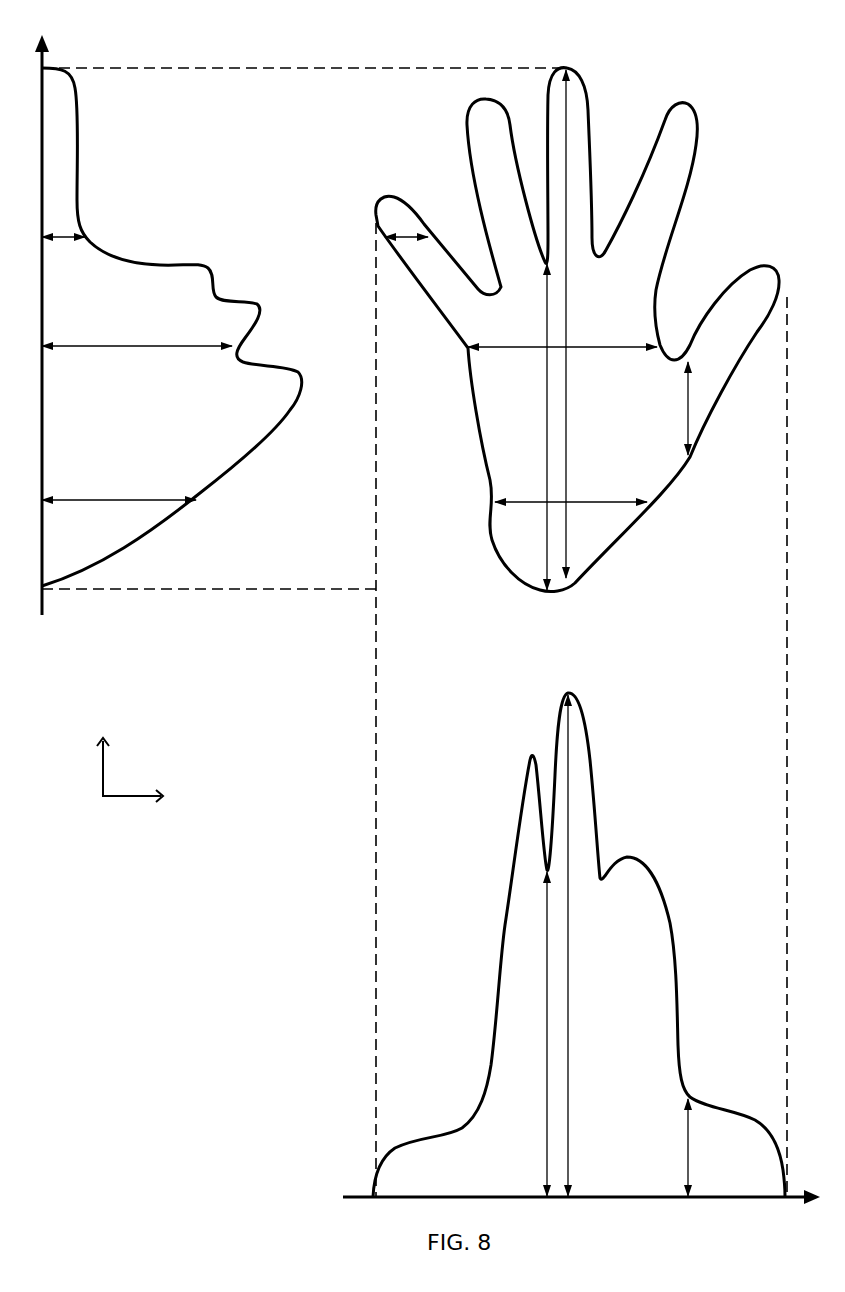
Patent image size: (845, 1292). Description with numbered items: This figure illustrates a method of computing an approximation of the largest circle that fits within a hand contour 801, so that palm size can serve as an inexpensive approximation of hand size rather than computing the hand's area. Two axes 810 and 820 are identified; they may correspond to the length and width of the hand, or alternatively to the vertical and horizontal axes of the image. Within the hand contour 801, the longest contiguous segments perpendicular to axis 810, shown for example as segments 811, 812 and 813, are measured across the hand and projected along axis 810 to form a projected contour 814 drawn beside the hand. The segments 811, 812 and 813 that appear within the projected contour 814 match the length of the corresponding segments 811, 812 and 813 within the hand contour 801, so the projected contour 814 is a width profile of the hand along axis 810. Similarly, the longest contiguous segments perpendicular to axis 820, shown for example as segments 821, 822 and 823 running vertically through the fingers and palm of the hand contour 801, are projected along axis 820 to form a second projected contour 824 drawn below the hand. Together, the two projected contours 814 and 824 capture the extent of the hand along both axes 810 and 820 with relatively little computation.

The hand contour 801 is at (692, 101).
The axis 810 is at (95, 409).
The longest contiguous segment 811 is at (235, 227).
The longest contiguous segment 812 is at (349, 336).
The longest contiguous segment 813 is at (344, 492).
The projected contour 814 is at (117, 253).
The axis 820 is at (500, 997).
The longest contiguous segment 821 is at (530, 730).
The longest contiguous segment 822 is at (584, 633).
The longest contiguous segment 823 is at (670, 779).
The projected contour 824 is at (462, 1120).